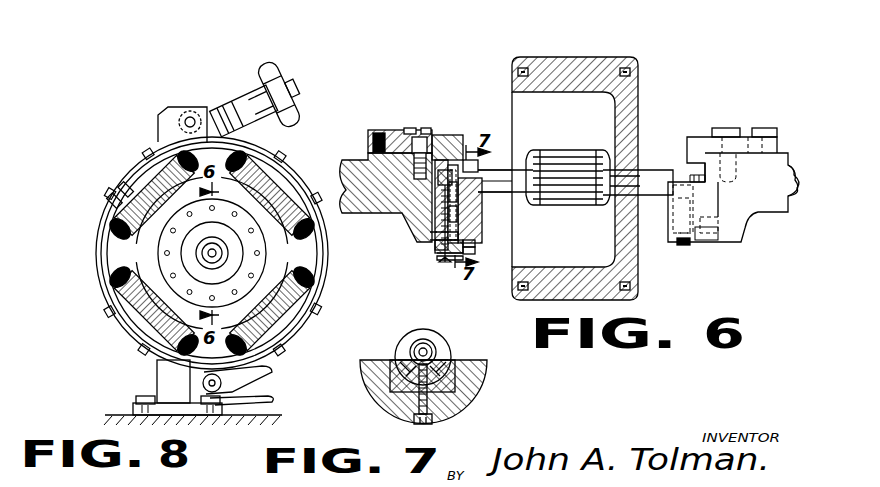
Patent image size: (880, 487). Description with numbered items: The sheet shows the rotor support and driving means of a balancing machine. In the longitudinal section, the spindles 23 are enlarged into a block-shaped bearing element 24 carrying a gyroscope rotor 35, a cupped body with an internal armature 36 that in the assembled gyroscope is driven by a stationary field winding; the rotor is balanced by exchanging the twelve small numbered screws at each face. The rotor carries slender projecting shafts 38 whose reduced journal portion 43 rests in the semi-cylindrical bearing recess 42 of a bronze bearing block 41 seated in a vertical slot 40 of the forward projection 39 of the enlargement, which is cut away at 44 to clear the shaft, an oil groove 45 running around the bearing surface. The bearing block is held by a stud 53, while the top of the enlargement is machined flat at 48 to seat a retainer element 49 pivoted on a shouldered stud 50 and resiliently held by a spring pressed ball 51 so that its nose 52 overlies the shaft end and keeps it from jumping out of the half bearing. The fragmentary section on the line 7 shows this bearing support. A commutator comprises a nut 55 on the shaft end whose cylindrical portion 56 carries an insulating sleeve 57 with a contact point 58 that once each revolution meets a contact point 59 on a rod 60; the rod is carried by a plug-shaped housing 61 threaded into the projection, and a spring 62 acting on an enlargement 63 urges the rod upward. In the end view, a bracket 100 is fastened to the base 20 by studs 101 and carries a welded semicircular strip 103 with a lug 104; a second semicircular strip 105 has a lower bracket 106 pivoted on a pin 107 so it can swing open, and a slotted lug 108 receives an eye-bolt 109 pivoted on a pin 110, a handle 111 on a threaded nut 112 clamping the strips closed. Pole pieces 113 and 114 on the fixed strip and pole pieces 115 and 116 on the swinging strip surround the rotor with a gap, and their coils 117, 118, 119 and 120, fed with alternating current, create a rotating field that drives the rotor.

In FIG. 6, the section line 7— 7 is at (518, 70).
In FIG. 8, the base 20 is at (106, 415).
In FIG. 6, the spindle 23 is at (800, 195).
In FIG. 6, the bearing element 24 is at (764, 216).
In FIG. 8, the gyroscope rotor 35 is at (258, 272).
In FIG. 6, the gyroscope rotor 35 is at (600, 56).
In FIG. 6, the internal armature 36 is at (568, 206).
In FIG. 7, the internal armature 36 is at (400, 336).
In FIG. 6, the projecting shaft 38 is at (527, 168).
In FIG. 6, the forward projection 39 is at (677, 243).
In FIG. 7, the forward projection 39 is at (480, 402).
In FIG. 6, the vertical slot 40 is at (482, 208).
In FIG. 7, the vertical slot 40 is at (398, 358).
In FIG. 6, the bearing block 41 is at (487, 184).
In FIG. 7, the bearing block 41 is at (488, 372).
In FIG. 7, the bearing recess 42 is at (460, 366).
In FIG. 6, the journal portion 43 is at (466, 136).
In FIG. 7, the journal portion 43 is at (424, 338).
In FIG. 6, the cut-away 44 is at (482, 198).
In FIG. 7, the cut-away 44 is at (444, 348).
In FIG. 6, the oil groove 45 is at (480, 166).
In FIG. 6, the flat seat 48 is at (370, 130).
In FIG. 6, the retainer element 49 is at (396, 127).
In FIG. 6, the shouldered stud 50 is at (418, 137).
In FIG. 6, the spring pressed ball 51 is at (372, 195).
In FIG. 6, the nose 52 is at (440, 128).
In FIG. 6, the stud 53 is at (480, 236).
In FIG. 7, the stud 53 is at (414, 410).
In FIG. 6, the nut 55 is at (462, 136).
In FIG. 6, the cylindrical portion 56 is at (434, 226).
In FIG. 6, the insulating sleeve 57 is at (438, 212).
In FIG. 6, the contact point 58 is at (430, 236).
In FIG. 6, the contact point 59 is at (438, 250).
In FIG. 6, the rod 60 is at (446, 260).
In FIG. 6, the plug-shaped housing 61 is at (476, 252).
In FIG. 6, the spring 62 is at (476, 244).
In FIG. 6, the enlargement 63 is at (482, 216).
In FIG. 8, the bracket 100 is at (158, 367).
In FIG. 8, the studs 101 is at (142, 404).
In FIG. 8, the semicircular strip 103 is at (101, 262).
In FIG. 8, the lug 104 is at (160, 125).
In FIG. 8, the semicircular strip 105 is at (322, 296).
In FIG. 8, the bracket 106 is at (264, 372).
In FIG. 8, the pin 107 is at (244, 386).
In FIG. 8, the slotted lug 108 is at (214, 100).
In FIG. 8, the eye-bolt 109 is at (292, 92).
In FIG. 8, the pin 110 is at (183, 114).
In FIG. 8, the handle 111 is at (266, 72).
In FIG. 8, the nut 112 is at (240, 88).
In FIG. 8, the pole piece 113 is at (102, 232).
In FIG. 8, the pole piece 114 is at (110, 280).
In FIG. 8, the pole piece 115 is at (318, 219).
In FIG. 8, the pole piece 116 is at (320, 247).
In FIG. 8, the coil 117 is at (106, 218).
In FIG. 8, the coil 118 is at (104, 306).
In FIG. 8, the coil 119 is at (318, 271).
In FIG. 8, the coil 120 is at (272, 142).